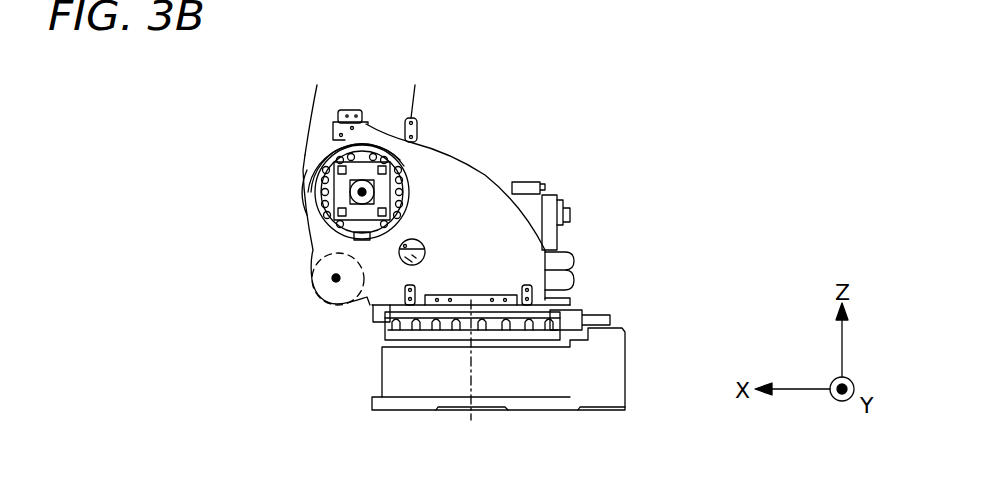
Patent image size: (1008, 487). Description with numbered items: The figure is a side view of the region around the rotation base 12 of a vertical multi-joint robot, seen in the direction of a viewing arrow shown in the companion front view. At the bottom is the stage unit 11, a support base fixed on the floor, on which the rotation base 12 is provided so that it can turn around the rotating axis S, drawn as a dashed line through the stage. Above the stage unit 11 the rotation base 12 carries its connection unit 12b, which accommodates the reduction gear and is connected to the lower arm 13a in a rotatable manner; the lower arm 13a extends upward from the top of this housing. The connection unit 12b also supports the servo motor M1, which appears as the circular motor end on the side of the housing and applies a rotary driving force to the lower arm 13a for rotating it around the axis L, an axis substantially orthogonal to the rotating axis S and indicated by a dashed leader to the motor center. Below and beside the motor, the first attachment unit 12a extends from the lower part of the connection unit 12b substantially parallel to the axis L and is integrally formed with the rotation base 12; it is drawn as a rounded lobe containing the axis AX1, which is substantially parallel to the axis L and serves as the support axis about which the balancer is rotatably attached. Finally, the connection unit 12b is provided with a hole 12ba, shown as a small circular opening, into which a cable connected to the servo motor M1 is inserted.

The stage unit 11 is at (550, 370).
The rotation base 12 is at (368, 293).
The first attachment unit 12a is at (330, 256).
The connection unit 12b is at (429, 174).
The hole 12ba is at (413, 240).
The lower arm 13a is at (313, 106).
The servo motor M1 is at (362, 170).
The axis L is at (357, 190).
The axis AX1 is at (334, 278).
The rotating axis S is at (471, 370).